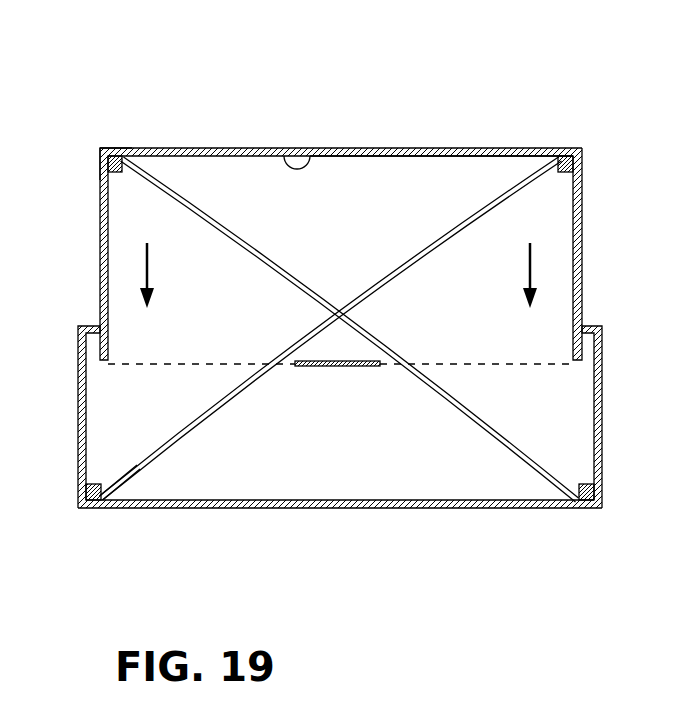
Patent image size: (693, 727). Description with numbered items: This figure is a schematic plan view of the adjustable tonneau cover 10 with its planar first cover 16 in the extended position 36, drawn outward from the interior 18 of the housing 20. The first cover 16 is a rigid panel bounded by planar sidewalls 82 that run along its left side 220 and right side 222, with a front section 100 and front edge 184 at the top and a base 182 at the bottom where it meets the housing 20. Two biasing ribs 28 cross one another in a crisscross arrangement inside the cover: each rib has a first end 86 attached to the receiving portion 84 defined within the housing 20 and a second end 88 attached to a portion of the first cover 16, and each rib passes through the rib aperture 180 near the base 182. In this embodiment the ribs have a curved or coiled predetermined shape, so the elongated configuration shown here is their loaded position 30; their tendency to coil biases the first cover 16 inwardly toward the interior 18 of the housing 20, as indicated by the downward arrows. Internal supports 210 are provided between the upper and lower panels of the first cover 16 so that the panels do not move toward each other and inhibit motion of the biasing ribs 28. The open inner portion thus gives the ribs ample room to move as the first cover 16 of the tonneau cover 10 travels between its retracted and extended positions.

The adjustable tonneau cover 10 is at (232, 105).
The first cover 16 is at (460, 130).
The interior 18 is at (451, 485).
The housing 20 is at (601, 470).
The biasing rib 28 is at (207, 214).
The loaded position 30 is at (400, 254).
The extended position 36 is at (210, 147).
The planar sidewalls 82 is at (101, 157).
The receiving portion 84 is at (80, 504).
The first end 86 is at (145, 470).
The second end 88 is at (115, 157).
The front section 100 is at (308, 147).
The rib aperture 180 is at (502, 371).
The base 182 is at (152, 368).
The front edge 184 is at (343, 147).
The internal supports 210 is at (338, 368).
The left side 220 is at (97, 195).
The right side 222 is at (586, 240).